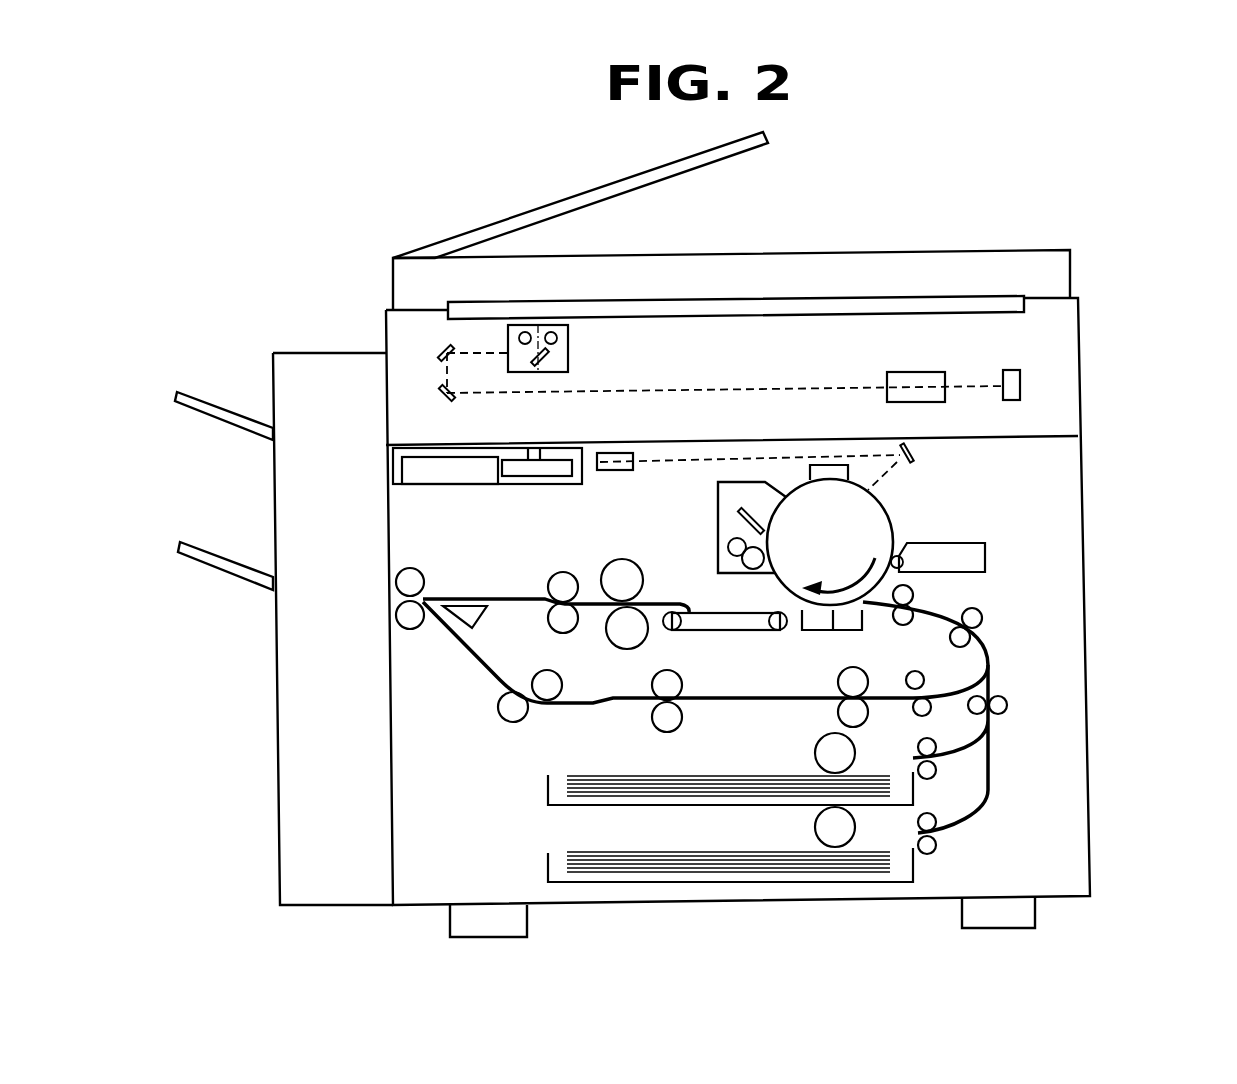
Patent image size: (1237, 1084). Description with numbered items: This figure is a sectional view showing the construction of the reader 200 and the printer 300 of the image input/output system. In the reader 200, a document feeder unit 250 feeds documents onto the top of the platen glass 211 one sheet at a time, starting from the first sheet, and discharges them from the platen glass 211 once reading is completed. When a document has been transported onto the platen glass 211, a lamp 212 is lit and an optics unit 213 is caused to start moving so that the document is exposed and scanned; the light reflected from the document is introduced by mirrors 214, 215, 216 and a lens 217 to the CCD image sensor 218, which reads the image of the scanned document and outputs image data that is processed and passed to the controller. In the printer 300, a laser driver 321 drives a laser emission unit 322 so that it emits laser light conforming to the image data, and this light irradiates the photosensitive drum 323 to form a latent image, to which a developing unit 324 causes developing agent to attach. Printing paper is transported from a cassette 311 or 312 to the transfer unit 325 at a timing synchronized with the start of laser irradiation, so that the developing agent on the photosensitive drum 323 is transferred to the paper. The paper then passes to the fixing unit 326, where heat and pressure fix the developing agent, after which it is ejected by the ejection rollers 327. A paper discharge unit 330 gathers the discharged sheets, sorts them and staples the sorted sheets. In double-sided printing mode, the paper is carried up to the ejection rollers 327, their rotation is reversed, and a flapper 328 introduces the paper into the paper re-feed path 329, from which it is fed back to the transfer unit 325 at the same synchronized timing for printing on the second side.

The reader 200 is at (1122, 133).
The platen glass 211 is at (945, 312).
The lamp 212 is at (556, 336).
The optics unit 213 is at (570, 364).
The mirror 214 is at (540, 362).
The mirror 215 is at (438, 352).
The mirror 216 is at (438, 398).
The lens 217 is at (930, 372).
The CCD image sensor 218 is at (1010, 370).
The document feeder unit 250 is at (508, 217).
The printer 300 is at (1127, 438).
The cassette 311 is at (903, 787).
The cassette 312 is at (903, 865).
The laser driver 321 is at (410, 468).
The laser emission unit 322 is at (535, 486).
The photosensitive drum 323 is at (866, 528).
The developing unit 324 is at (975, 553).
The transfer unit 325 is at (820, 632).
The fixing unit 326 is at (620, 572).
The ejection rollers 327 is at (400, 618).
The flapper 328 is at (456, 630).
The paper re-feed path 329 is at (652, 700).
The paper discharge unit 330 is at (296, 892).